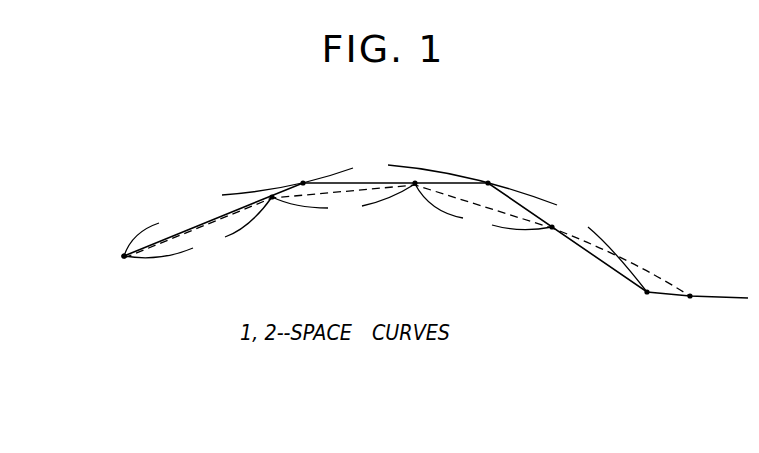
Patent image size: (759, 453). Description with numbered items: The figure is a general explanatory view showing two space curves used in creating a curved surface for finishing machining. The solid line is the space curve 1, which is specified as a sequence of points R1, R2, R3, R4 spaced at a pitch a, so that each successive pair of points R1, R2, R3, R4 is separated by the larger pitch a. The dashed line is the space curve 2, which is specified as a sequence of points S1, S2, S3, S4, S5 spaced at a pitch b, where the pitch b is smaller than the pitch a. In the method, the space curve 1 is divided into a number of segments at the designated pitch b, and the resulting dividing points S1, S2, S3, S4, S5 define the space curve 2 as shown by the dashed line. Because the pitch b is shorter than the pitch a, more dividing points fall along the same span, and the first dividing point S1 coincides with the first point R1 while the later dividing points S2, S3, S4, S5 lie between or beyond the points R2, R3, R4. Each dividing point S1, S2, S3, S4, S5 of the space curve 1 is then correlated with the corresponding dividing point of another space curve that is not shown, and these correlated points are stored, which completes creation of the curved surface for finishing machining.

The space curve 1 is at (731, 299).
The space curve 2 is at (657, 275).
The first point of the point sequence R_i R1 is at (109, 251).
The second point of the point sequence R_i R2 is at (300, 172).
The third point of the point sequence R_i R3 is at (496, 171).
The fourth point of the point sequence R_i R4 is at (647, 306).
The first dividing point of the point sequence S_i S1 is at (127, 268).
The second dividing point of the point sequence S_i S2 is at (278, 213).
The third dividing point of the point sequence S_i S3 is at (413, 199).
The fourth dividing point of the point sequence S_i S4 is at (548, 241).
The fifth dividing point of the point sequence S_i S5 is at (692, 308).
The pitch a is at (385, 222).
The pitch b is at (338, 221).